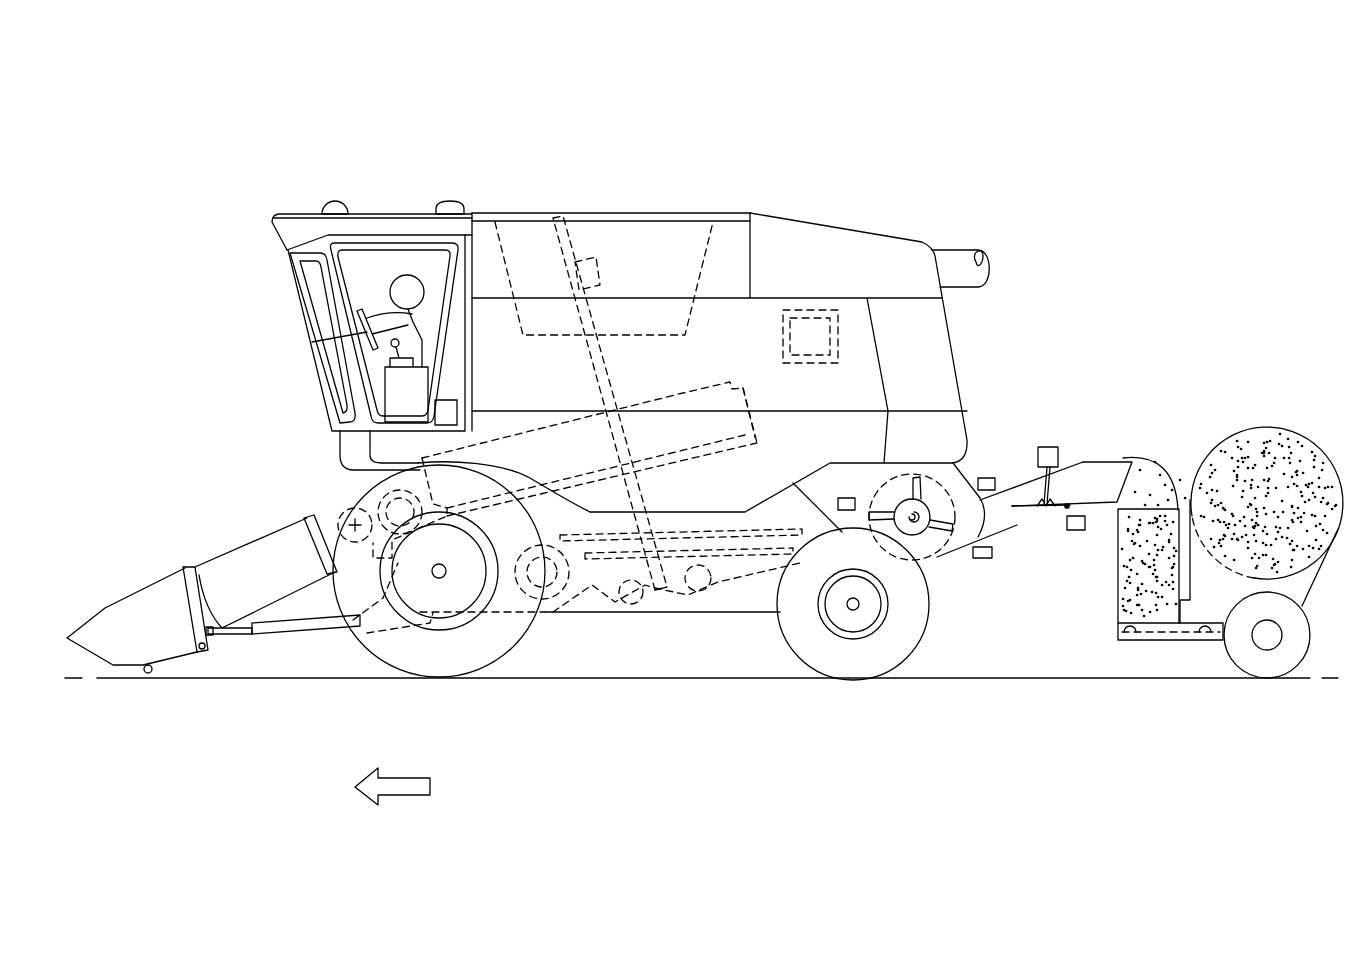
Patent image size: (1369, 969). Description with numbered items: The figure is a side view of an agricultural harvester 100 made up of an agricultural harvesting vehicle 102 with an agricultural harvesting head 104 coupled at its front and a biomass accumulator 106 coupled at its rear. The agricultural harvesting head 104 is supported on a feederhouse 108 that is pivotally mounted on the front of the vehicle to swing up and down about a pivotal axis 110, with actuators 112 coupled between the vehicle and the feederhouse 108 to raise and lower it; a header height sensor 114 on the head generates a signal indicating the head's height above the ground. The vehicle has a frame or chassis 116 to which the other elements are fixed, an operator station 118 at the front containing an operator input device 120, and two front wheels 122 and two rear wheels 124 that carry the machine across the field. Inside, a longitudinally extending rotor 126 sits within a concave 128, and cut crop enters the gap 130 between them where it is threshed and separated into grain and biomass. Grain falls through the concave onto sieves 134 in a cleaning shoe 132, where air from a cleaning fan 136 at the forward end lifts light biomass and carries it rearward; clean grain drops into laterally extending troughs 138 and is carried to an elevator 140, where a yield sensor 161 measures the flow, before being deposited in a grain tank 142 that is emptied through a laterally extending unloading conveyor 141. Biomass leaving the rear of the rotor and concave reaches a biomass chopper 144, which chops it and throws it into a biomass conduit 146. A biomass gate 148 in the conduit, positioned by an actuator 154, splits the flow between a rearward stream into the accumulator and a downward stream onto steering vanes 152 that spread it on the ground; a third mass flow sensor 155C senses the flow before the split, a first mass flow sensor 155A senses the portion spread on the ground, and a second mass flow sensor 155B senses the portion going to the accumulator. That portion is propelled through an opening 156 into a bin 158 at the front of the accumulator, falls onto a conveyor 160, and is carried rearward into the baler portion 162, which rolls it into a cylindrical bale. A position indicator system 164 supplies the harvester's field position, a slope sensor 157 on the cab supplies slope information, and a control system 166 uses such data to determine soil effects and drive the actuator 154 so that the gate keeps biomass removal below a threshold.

The agricultural harvester 100 is at (185, 147).
The agricultural harvesting vehicle 102 is at (623, 243).
The agricultural harvesting head 104 is at (140, 470).
The biomass accumulator 106 is at (1253, 355).
The feederhouse 108 is at (267, 534).
The pivotal axis 110 is at (352, 515).
The actuators 112 is at (302, 634).
The header height sensor 114 is at (148, 674).
The frame or chassis 116 is at (590, 612).
The operator station 118 is at (372, 262).
The operator input device 120 is at (393, 343).
The front wheels 122 is at (512, 660).
The rear wheels 124 is at (812, 663).
The rotor 126 is at (687, 380).
The concave 128 is at (770, 423).
The gap 130 is at (703, 455).
The cleaning shoe 132 is at (655, 620).
The sieves 134 is at (690, 533).
The cleaning fan 136 is at (522, 627).
The troughs 138 is at (660, 600).
The elevator 140 is at (572, 253).
The unloading conveyor 141 is at (957, 250).
The grain tank 142 is at (547, 203).
The biomass chopper 144 is at (900, 567).
The biomass conduit 146 is at (1052, 470).
The biomass gate 148 is at (1027, 508).
The steering vanes 152 is at (1067, 525).
The actuator 154 is at (1045, 447).
The first mass flow sensor 155A is at (977, 558).
The second mass flow sensor 155B is at (987, 477).
The third mass flow sensor 155C is at (849, 498).
The opening 156 is at (1107, 452).
The slope sensor 157 is at (330, 201).
The bin 158 is at (1117, 570).
The conveyor 160 is at (1168, 640).
The yield sensor 161 is at (598, 273).
The baler portion 162 is at (1310, 428).
The position indicator system 164 is at (452, 198).
The control system 166 is at (448, 400).